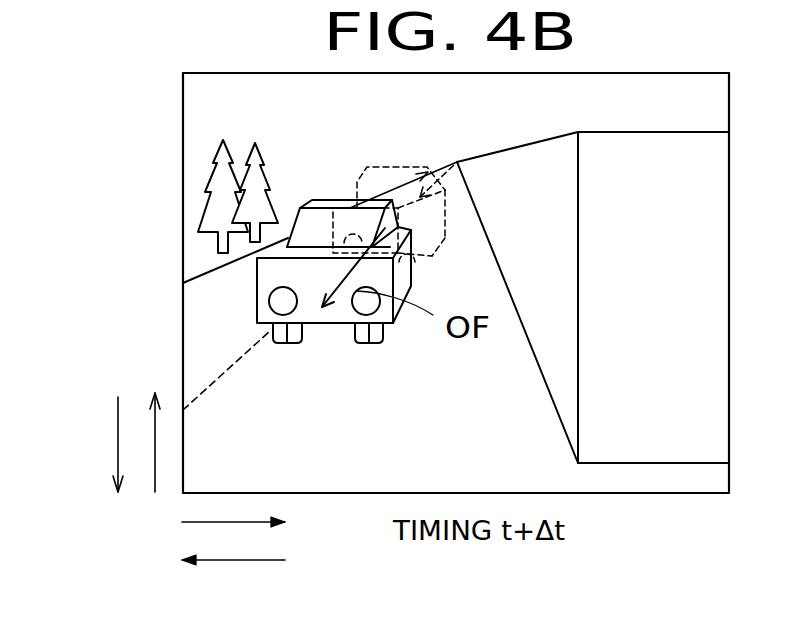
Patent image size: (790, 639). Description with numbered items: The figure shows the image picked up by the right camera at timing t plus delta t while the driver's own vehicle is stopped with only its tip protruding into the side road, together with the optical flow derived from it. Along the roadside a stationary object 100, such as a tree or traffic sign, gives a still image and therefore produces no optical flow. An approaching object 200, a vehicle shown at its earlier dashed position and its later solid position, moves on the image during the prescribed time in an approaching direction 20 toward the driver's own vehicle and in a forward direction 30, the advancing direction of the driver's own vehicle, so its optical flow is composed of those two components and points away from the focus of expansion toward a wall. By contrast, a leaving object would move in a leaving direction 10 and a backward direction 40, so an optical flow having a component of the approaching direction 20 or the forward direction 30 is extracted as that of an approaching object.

The stationary object 100 is at (203, 207).
The approaching object 200 is at (318, 197).
The leaving direction 10 is at (155, 455).
The approaching direction 20 is at (118, 442).
The forward direction 30 is at (230, 560).
The backward direction 40 is at (243, 522).